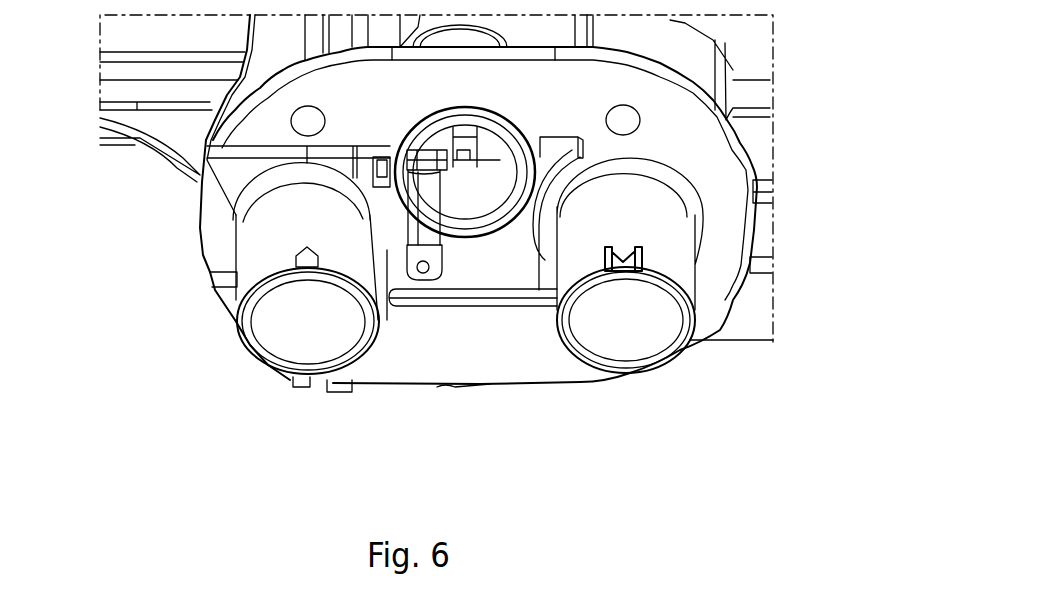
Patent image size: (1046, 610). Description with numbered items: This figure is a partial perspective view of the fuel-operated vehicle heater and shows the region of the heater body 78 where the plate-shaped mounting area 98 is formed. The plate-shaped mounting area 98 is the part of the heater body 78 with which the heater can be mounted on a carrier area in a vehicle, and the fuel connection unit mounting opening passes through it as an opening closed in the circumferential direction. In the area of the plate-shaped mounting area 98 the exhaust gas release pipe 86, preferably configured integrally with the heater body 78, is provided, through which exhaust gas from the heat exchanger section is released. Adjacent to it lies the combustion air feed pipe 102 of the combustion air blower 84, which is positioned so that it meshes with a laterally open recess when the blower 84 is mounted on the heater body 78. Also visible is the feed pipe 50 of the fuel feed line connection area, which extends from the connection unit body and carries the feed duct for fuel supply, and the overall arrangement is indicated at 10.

The assembly 10 is at (412, 279).
The feed pipe 50 is at (420, 228).
The heater body 78 is at (733, 72).
The combustion air blower 84 is at (193, 122).
The exhaust gas release pipe 86 is at (693, 290).
The plate-shaped mounting area 98 is at (533, 367).
The combustion air feed pipe 102 is at (253, 232).